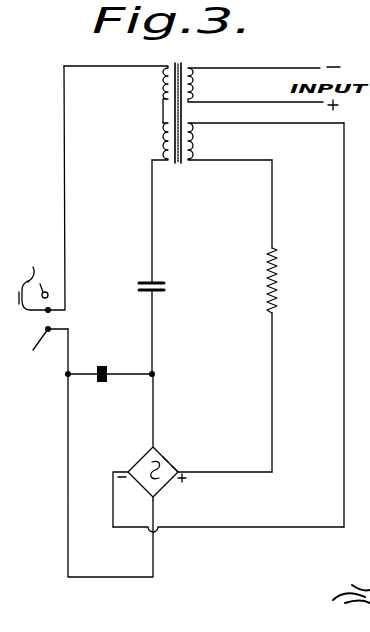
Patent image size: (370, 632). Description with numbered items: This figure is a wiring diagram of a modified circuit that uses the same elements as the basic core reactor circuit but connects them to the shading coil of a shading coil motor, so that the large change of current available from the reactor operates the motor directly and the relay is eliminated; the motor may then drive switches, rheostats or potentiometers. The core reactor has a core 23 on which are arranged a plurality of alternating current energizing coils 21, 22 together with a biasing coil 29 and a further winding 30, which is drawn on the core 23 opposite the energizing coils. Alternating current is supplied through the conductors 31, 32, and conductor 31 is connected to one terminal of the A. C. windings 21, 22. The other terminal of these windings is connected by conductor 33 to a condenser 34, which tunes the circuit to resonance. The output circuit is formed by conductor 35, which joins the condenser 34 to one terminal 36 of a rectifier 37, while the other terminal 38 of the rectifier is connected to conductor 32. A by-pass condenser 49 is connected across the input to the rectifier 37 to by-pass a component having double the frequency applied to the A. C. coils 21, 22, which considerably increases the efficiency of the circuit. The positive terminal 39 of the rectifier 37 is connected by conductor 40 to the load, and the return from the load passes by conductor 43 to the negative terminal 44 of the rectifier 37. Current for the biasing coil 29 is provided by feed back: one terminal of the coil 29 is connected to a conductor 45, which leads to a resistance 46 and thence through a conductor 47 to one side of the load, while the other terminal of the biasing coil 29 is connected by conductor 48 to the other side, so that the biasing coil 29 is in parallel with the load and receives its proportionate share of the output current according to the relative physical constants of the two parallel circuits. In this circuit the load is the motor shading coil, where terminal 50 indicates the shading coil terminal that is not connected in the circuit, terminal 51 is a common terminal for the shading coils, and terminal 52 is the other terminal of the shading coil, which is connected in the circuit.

The alternating current energizing coil 21 is at (163, 84).
The alternating current energizing coil 22 is at (163, 140).
The core 23 is at (179, 64).
The biasing coil 29 is at (195, 144).
The secondary winding 30 is at (196, 86).
The conductor 31 is at (66, 183).
The conductor 32 is at (154, 548).
The conductor 33 is at (153, 245).
The condenser 34 is at (165, 283).
The conductor 35 is at (153, 347).
The rectifier terminal 36 is at (155, 446).
The rectifier 37 is at (163, 457).
The rectifier terminal 38 is at (157, 497).
The positive terminal 39 is at (172, 466).
The conductor 40 is at (226, 472).
The conductor 43 is at (262, 528).
The negative terminal 44 is at (125, 469).
The conductor 45 is at (280, 176).
The resistance 46 is at (278, 287).
The conductor 47 is at (274, 384).
The conductor 48 is at (344, 215).
The by-pass condenser 49 is at (117, 355).
The shading coil terminal 50 is at (49, 283).
The common terminal 51 is at (33, 282).
The shading coil terminal 52 is at (47, 352).